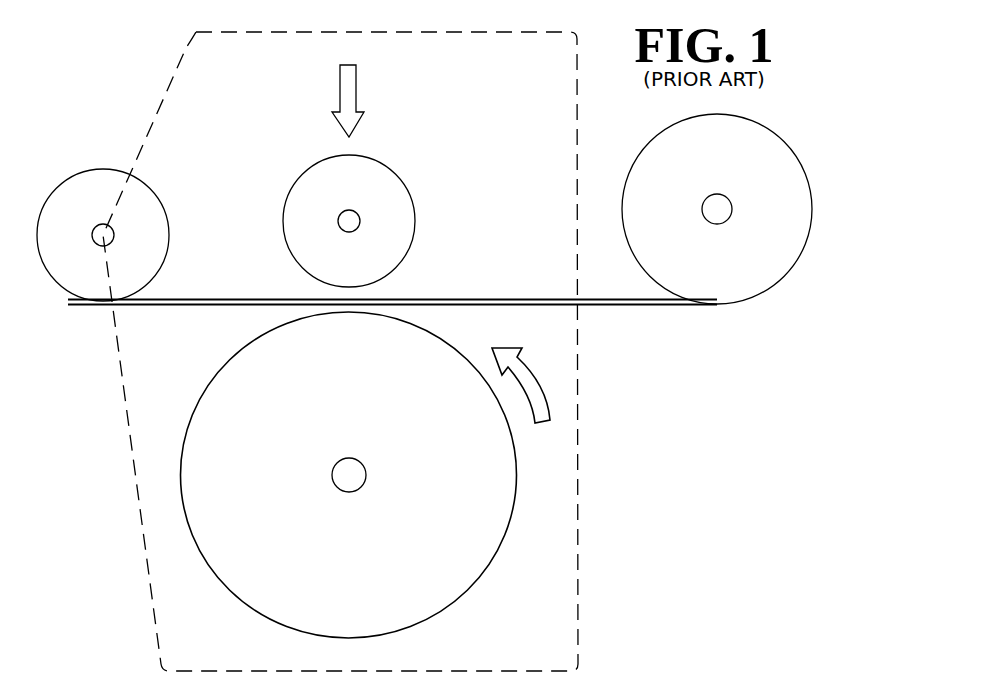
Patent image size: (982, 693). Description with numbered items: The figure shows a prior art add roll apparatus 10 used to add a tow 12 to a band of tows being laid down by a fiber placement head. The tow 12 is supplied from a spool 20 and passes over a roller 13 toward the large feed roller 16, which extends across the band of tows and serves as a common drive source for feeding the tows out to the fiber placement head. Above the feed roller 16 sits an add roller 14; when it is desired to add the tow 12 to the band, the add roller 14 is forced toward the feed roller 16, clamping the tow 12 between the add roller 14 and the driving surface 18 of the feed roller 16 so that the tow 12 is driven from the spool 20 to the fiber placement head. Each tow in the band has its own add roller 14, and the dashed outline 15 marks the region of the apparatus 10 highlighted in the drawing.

The add roll apparatus 10 is at (250, 202).
The tow 12 is at (643, 305).
The feed roller 13 is at (68, 178).
The add roller 14 is at (378, 183).
The print area (dashed outline) 15 is at (184, 53).
The feed roller 16 is at (495, 502).
The driving surface 18 is at (517, 457).
The spool 20 is at (772, 178).